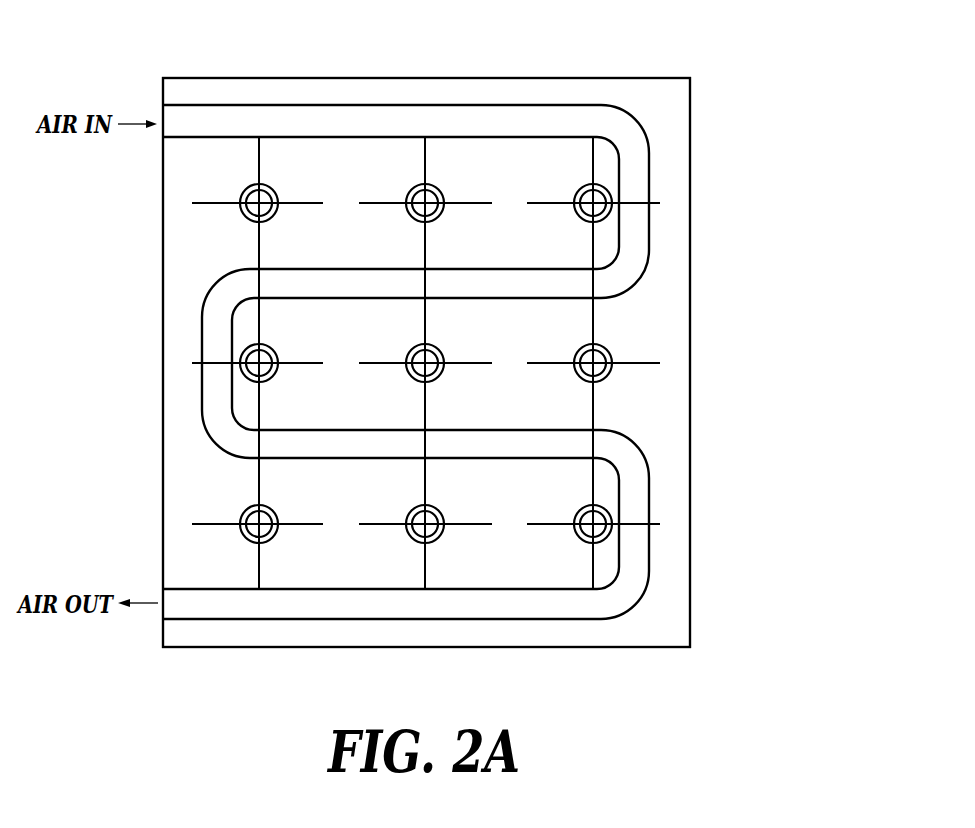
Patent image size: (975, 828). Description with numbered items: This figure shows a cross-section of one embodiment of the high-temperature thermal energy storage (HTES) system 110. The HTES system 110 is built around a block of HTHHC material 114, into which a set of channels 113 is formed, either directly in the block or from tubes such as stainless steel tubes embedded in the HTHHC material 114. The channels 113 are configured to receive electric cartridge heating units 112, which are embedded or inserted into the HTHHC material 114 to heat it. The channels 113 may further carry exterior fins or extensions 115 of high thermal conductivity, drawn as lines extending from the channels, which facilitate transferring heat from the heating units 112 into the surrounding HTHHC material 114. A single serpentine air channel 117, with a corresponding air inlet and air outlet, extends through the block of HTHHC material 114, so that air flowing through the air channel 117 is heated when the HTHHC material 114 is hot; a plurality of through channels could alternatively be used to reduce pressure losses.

The HTES system 110 is at (758, 82).
The heating units 112 is at (430, 197).
The channels 113 is at (423, 197).
The HTHHC material 114 is at (646, 96).
The exterior fins or extensions 115 is at (656, 198).
The air channel 117 is at (192, 127).